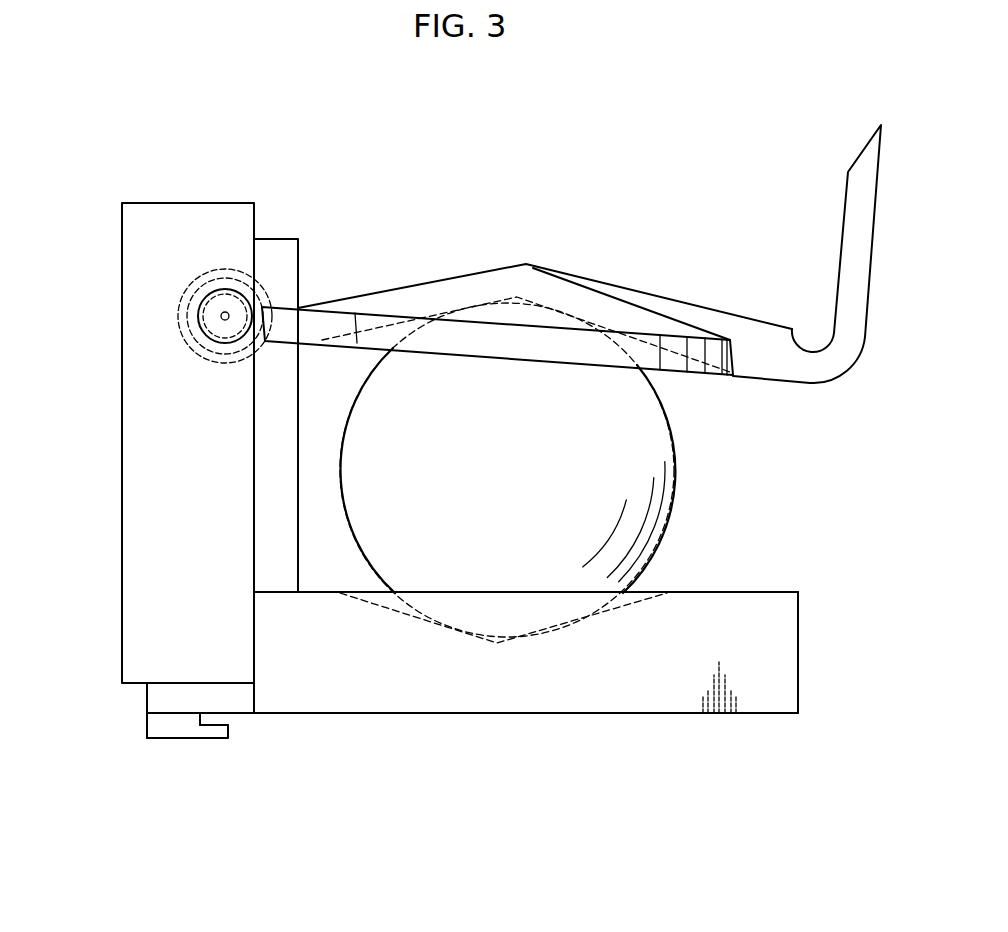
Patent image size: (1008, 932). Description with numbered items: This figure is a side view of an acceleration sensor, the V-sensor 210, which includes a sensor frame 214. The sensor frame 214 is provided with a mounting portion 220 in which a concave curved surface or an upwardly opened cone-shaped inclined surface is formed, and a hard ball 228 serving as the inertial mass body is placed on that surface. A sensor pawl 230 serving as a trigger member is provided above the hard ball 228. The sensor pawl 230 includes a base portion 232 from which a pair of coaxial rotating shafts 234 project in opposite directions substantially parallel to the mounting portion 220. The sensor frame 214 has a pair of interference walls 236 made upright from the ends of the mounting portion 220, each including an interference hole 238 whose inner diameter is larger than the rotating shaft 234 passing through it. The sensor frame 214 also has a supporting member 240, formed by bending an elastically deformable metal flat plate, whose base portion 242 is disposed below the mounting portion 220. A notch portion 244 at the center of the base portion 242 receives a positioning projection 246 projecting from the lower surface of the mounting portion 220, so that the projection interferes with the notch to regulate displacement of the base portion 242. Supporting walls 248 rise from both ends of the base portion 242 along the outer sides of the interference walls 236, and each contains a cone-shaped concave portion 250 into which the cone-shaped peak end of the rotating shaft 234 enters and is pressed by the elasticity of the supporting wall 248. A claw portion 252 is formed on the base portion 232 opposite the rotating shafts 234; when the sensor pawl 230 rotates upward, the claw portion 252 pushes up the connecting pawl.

The V-sensor 210 is at (180, 828).
The sensor frame 214 is at (772, 556).
The mounting portion 220 is at (712, 592).
The hard ball 228 is at (652, 432).
The sensor pawl 230 is at (600, 248).
The base portion 232 is at (445, 280).
The rotating shaft 234 is at (233, 291).
The interference wall 236 is at (145, 563).
The interference hole 238 is at (193, 336).
The supporting member 240 is at (298, 686).
The base portion 242 is at (267, 722).
The notch portion 244 is at (197, 730).
The positioning projection 246 is at (158, 739).
The supporting wall 248 is at (172, 462).
The concave portion 250 is at (192, 292).
The claw portion 252 is at (845, 208).